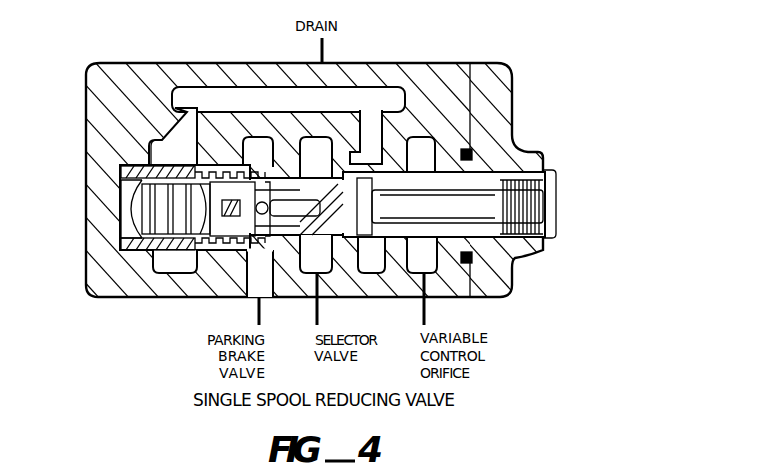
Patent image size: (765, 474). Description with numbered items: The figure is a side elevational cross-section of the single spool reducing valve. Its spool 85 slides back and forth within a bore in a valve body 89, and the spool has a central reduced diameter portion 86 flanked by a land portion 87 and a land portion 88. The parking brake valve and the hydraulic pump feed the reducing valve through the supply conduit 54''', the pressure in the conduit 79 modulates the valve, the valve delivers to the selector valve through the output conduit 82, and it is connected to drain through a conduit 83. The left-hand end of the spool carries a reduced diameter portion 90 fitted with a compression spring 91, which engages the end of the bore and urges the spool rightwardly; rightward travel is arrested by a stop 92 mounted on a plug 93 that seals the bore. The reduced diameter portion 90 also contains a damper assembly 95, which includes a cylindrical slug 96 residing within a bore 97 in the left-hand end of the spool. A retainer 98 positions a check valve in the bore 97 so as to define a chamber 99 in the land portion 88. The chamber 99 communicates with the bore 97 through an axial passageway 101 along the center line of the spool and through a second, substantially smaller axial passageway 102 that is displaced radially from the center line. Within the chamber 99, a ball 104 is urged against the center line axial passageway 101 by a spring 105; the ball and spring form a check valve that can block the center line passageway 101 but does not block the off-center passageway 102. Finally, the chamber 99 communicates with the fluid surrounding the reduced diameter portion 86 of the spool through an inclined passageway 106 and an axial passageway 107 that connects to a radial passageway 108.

The valve body 89 is at (92, 106).
The conduit 83 is at (324, 51).
The bore 97 is at (191, 164).
The cylindrical slug 96 is at (161, 152).
The inclined passageway 106 is at (258, 152).
The radial passageway 108 is at (316, 158).
The spool 85 is at (322, 196).
The land portion 87 is at (378, 275).
The conduit 79 is at (424, 316).
The supply conduit 54''' is at (332, 246).
The spring 105 is at (260, 269).
The retainer 98 is at (175, 262).
The output conduit 82 is at (317, 316).
The central reduced diameter portion 86 is at (316, 239).
The axial passageway 107 is at (316, 261).
The compression spring 91 is at (120, 170).
The reduced diameter portion 90 is at (122, 235).
The damper assembly 95 is at (124, 208).
The land portion 88 is at (188, 252).
The second axial passageway 102 is at (220, 240).
The ball 104 is at (258, 216).
The chamber 99 is at (237, 165).
The axial passageway 101 is at (200, 165).
The stop 92 is at (450, 215).
The plug 93 is at (549, 207).